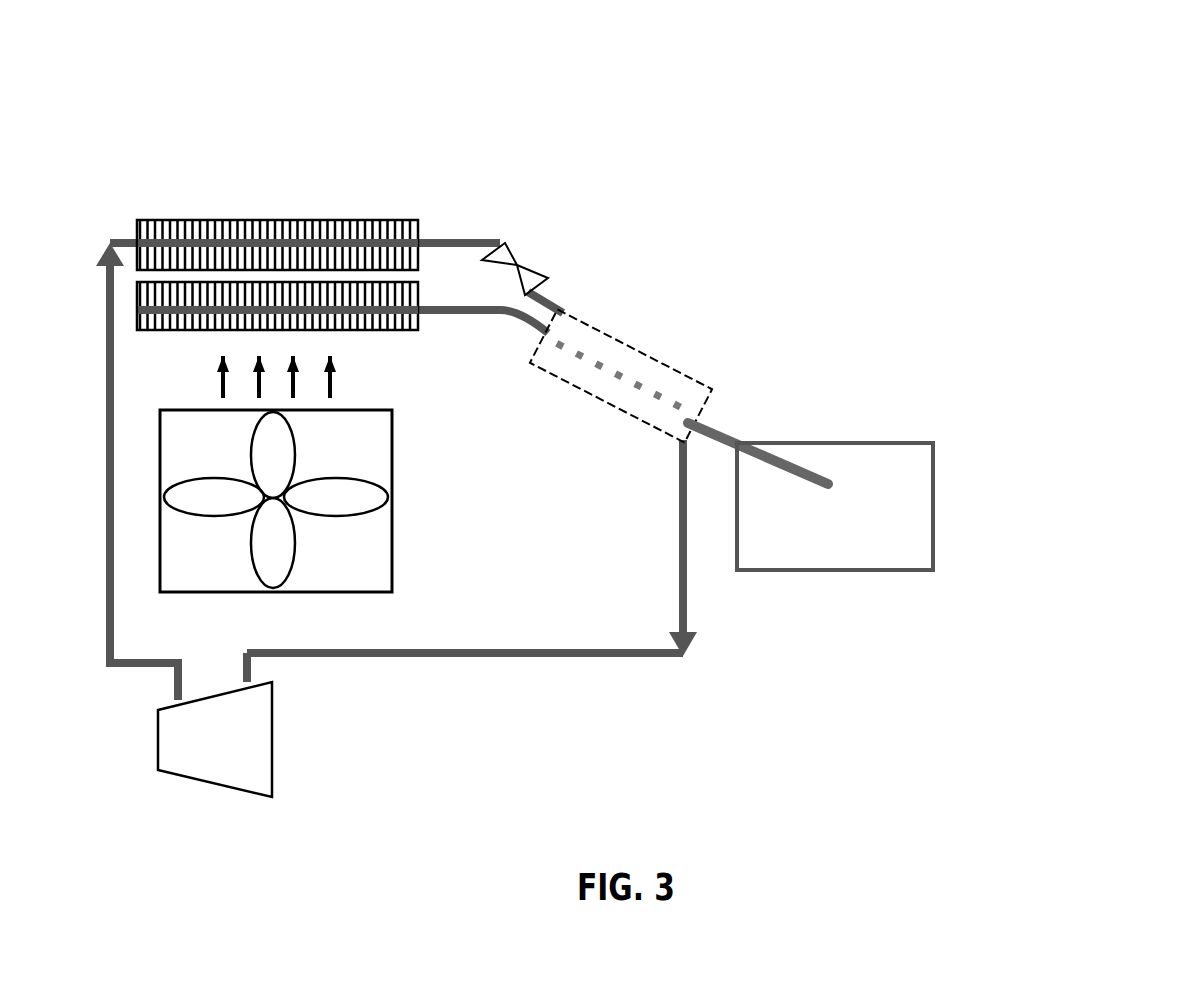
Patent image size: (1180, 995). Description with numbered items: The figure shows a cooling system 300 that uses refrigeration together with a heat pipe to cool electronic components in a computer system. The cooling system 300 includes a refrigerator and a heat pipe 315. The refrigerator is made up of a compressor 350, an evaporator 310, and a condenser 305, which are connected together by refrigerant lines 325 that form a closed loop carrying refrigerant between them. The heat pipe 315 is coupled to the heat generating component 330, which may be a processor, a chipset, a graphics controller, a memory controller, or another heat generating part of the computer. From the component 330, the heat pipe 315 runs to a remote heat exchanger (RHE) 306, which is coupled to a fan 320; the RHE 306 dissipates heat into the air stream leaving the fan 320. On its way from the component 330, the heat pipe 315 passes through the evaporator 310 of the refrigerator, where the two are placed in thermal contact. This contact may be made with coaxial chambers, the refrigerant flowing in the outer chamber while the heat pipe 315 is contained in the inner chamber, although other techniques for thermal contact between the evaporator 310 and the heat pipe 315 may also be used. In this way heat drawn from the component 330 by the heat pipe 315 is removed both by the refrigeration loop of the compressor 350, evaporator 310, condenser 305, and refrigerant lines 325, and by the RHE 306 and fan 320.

The cooling system 300 is at (627, 98).
The condenser 305 is at (385, 167).
The remote heat exchanger (RHE) 306 is at (162, 278).
The evaporator 310 is at (660, 352).
The heat pipe 315 is at (746, 416).
The fan 320 is at (276, 474).
The refrigerant lines 325 is at (718, 662).
The heat generating component 330 is at (1013, 542).
The compressor 350 is at (280, 726).